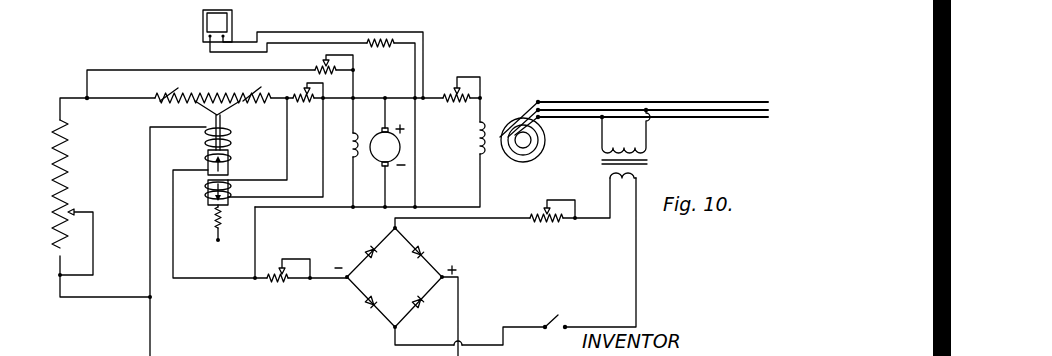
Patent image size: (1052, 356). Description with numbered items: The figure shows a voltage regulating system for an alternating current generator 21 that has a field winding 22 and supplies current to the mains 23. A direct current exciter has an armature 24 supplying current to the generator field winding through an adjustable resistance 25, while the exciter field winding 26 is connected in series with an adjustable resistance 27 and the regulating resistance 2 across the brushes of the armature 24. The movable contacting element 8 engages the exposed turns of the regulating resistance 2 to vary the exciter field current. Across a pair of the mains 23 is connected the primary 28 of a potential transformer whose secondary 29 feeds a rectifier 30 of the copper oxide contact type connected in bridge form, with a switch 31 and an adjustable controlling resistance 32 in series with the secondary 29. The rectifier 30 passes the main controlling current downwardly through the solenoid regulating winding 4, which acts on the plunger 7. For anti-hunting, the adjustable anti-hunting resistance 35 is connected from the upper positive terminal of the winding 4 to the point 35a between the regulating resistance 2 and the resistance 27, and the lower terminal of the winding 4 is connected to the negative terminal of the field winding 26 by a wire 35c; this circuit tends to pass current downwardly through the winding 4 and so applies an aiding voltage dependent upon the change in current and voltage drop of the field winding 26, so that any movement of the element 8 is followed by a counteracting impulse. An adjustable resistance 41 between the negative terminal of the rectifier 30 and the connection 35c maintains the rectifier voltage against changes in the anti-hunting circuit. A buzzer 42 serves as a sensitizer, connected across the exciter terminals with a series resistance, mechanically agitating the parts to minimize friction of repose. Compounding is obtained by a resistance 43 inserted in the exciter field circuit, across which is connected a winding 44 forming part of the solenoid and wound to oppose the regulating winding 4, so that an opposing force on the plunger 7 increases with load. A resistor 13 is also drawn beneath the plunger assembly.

The regulating resistance 2 is at (208, 98).
The regulating winding 4 is at (231, 139).
The plunger 7 is at (228, 176).
The movable contacting element 8 is at (200, 107).
The resistor 13 is at (223, 226).
The generator 21 is at (515, 160).
The field winding 22 is at (477, 133).
The mains 23 is at (687, 88).
The armature 24 is at (387, 145).
The adjustable resistance 25 is at (458, 102).
The field winding 26 is at (353, 148).
The adjustable resistance 27 is at (322, 62).
The primary 28 is at (625, 136).
The secondary 29 is at (640, 182).
The rectifier 30 is at (383, 238).
The switch 31 is at (561, 321).
The adjustable controlling resistance 32 is at (547, 224).
The anti-hunting resistance 35 is at (55, 197).
The point 35a is at (87, 98).
The wire 35c is at (256, 238).
The adjustable resistance 41 is at (278, 285).
The buzzer 42 is at (202, 18).
The resistance 43 is at (310, 100).
The winding 44 is at (208, 193).